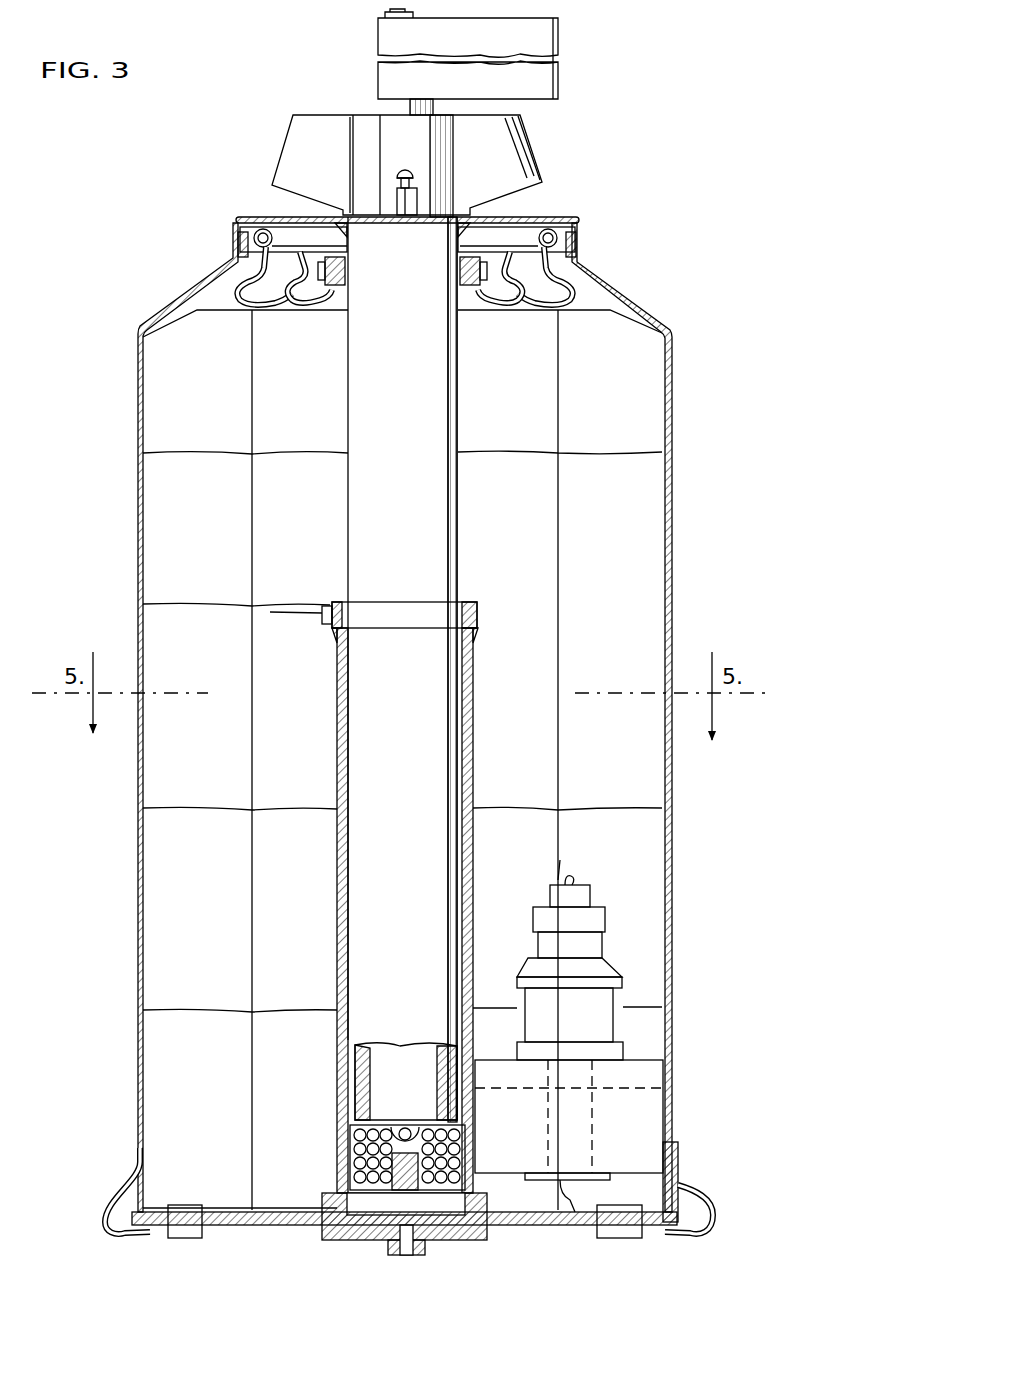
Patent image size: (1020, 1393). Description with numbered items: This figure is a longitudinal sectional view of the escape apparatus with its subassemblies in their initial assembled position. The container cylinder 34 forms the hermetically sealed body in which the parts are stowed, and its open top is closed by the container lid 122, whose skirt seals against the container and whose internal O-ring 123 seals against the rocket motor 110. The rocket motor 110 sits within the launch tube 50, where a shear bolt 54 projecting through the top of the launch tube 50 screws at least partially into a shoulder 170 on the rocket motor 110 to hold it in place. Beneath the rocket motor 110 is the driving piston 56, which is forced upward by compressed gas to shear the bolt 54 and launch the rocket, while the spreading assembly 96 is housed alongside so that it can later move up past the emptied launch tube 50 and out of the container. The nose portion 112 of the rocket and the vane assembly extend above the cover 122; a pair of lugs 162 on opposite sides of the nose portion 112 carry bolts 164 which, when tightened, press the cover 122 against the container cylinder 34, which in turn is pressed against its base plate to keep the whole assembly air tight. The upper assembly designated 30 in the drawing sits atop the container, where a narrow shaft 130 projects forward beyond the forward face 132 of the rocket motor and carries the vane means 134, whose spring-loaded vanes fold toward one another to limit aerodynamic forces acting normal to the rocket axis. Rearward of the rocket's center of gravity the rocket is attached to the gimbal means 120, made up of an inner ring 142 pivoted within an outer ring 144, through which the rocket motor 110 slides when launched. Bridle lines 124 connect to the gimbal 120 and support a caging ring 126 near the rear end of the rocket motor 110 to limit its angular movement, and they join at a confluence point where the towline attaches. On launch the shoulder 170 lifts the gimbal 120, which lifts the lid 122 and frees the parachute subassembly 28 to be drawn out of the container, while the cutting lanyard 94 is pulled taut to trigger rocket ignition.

The parachute subassembly 28 is at (170, 400).
The cap assembly 30 is at (400, 142).
The container cylinder 34 is at (672, 462).
The launch tube 50 is at (473, 785).
The shear bolt 54 is at (330, 608).
The driving piston 56 is at (325, 1188).
The cutting lanyard 94 is at (350, 1143).
The spreading assembly 96 is at (630, 1082).
The rocket motor 110 is at (410, 466).
The nose portion 112 is at (522, 150).
The gimbal means 120 is at (340, 290).
The container lid 122 is at (262, 218).
The internal O-ring 123 is at (348, 228).
The bridle lines 124 is at (266, 305).
The caging ring 126 is at (550, 220).
The narrow shaft 130 is at (385, 13).
The forward face 132 is at (368, 110).
The vane means 134 is at (560, 78).
The inner ring 142 is at (455, 276).
The outer ring 144 is at (484, 298).
The lugs 162 is at (415, 200).
The bolts 164 is at (398, 170).
The shoulder 170 is at (445, 605).